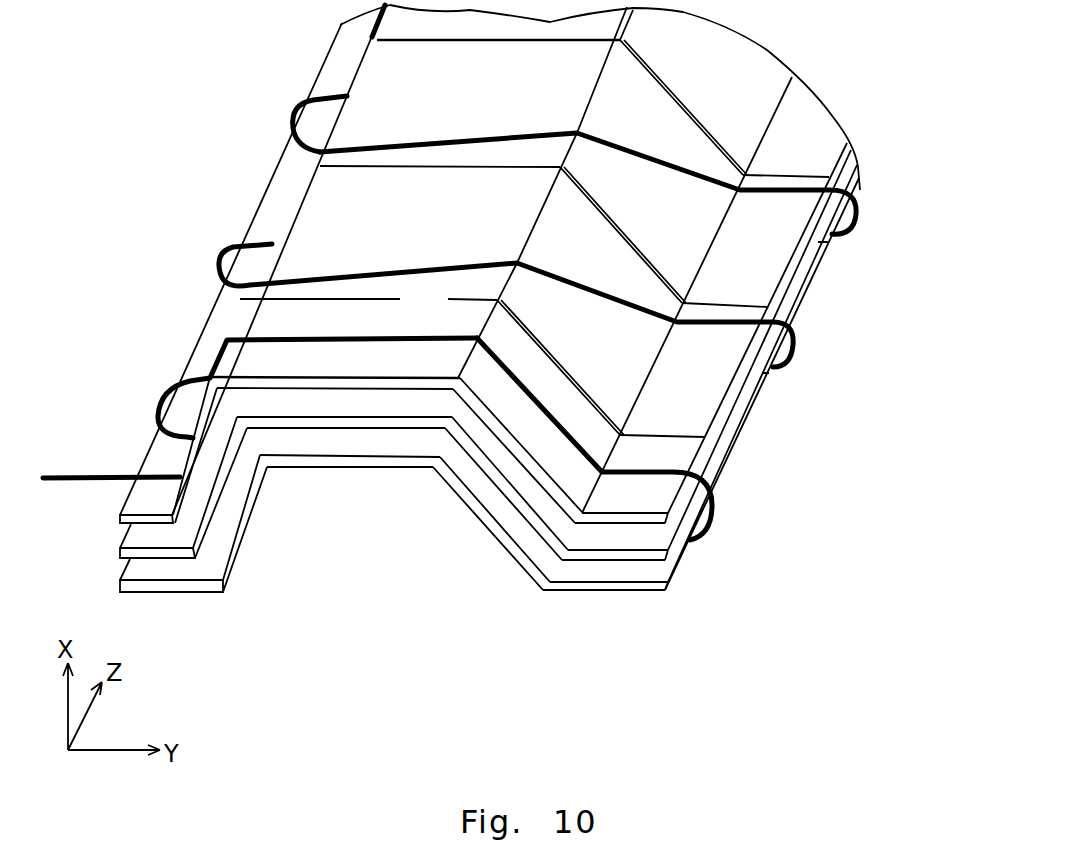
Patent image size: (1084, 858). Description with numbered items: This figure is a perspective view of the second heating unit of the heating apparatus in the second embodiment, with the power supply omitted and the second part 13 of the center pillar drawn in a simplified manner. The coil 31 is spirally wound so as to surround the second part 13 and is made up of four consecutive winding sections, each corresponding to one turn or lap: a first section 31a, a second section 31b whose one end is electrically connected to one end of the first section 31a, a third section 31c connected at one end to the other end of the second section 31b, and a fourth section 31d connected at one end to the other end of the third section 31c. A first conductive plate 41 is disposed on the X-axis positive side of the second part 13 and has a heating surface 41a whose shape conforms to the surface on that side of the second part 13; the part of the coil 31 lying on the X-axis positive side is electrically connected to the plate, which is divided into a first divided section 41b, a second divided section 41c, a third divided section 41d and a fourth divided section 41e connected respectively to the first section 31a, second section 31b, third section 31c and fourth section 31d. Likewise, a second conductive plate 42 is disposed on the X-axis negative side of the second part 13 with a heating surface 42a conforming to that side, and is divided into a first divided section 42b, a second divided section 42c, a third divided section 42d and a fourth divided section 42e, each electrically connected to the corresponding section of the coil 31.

The second part 13 is at (343, 424).
The coil 31 is at (548, 113).
The first section 31a is at (310, 103).
The second section 31b is at (455, 140).
The third section 31c is at (338, 270).
The fourth section 31d is at (405, 333).
The first conductive plate 41 is at (180, 357).
The heating surface 41a is at (625, 528).
The first divided section 41b is at (813, 143).
The second divided section 41c is at (780, 250).
The third divided section 41d is at (715, 378).
The fourth divided section 41e is at (682, 460).
The second conductive plate 42 is at (645, 609).
The heating surface 42a is at (518, 528).
The first divided section 42b is at (858, 200).
The second divided section 42c is at (810, 303).
The third divided section 42d is at (740, 435).
The fourth divided section 42e is at (673, 583).